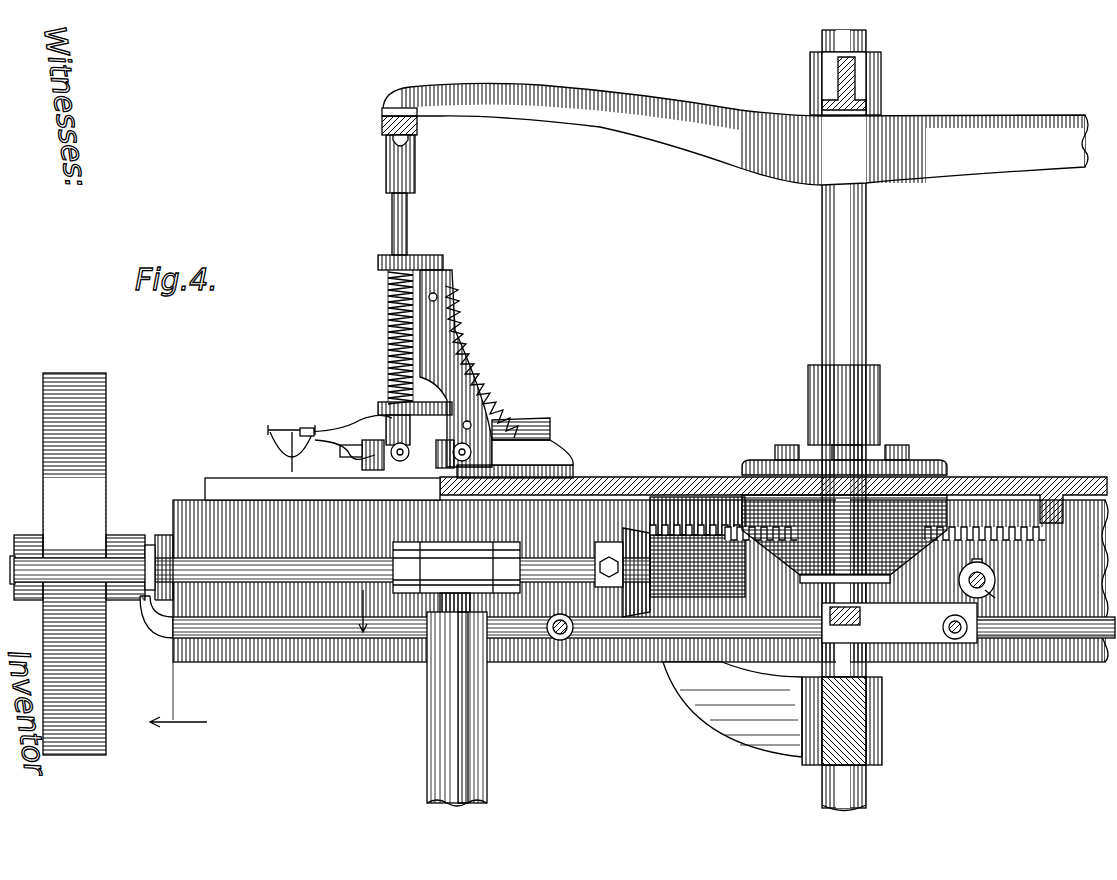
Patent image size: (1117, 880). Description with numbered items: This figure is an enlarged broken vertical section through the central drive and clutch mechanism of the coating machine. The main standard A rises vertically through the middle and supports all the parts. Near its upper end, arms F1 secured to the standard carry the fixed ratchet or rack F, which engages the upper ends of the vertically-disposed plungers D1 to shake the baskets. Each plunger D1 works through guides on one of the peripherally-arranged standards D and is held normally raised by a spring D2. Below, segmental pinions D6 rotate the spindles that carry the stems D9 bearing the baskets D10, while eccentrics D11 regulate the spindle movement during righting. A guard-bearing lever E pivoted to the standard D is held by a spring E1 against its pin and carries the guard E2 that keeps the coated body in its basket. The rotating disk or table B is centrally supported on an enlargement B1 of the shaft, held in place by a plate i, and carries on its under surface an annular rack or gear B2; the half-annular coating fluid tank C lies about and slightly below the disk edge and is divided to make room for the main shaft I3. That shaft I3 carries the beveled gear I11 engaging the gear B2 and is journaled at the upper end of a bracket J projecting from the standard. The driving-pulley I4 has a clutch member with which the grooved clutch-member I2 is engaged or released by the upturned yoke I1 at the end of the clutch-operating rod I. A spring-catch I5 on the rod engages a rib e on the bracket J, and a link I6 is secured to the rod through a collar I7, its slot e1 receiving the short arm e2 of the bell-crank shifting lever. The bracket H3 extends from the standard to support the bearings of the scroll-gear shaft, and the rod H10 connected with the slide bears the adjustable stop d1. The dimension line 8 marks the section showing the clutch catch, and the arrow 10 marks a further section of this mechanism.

The fixed ratchet or rack F is at (382, 122).
The arms F1 is at (735, 150).
The main standard A is at (867, 268).
The peripherally-arranged standards D is at (443, 262).
The vertically-disposed plungers D1 is at (392, 218).
The springs D2 is at (388, 328).
The springs E1 is at (479, 368).
The guard-bearing levers E is at (536, 416).
The guards E2 is at (306, 428).
The baskets D10 is at (272, 445).
The stems D9 is at (348, 450).
The eccentrics D11 is at (380, 468).
The segmental pinions D6 is at (322, 489).
The driving-pulley I4 is at (96, 460).
The coating fluid tank C is at (176, 505).
The clutch-member I2 is at (162, 536).
The main shaft I3 is at (401, 579).
The beveled gear I11 is at (608, 540).
The annular rack or gear B2 is at (641, 505).
The plate i is at (907, 460).
The rotating disk or table B is at (990, 478).
The enlargement B1 is at (805, 608).
The rod H10 is at (996, 580).
The slot e1 is at (862, 612).
The adjustable stop d1 is at (990, 594).
The short arm e2 is at (860, 622).
The line 8 is at (356, 611).
The upturned yoke I1 is at (160, 607).
The clutch-operating rod I is at (312, 617).
The spring-catch I5 is at (522, 650).
The rib e is at (432, 704).
The bracket J is at (480, 747).
The collar I7 is at (950, 632).
The link I6 is at (944, 640).
The bracket H3 is at (868, 735).
The line 10 is at (178, 734).